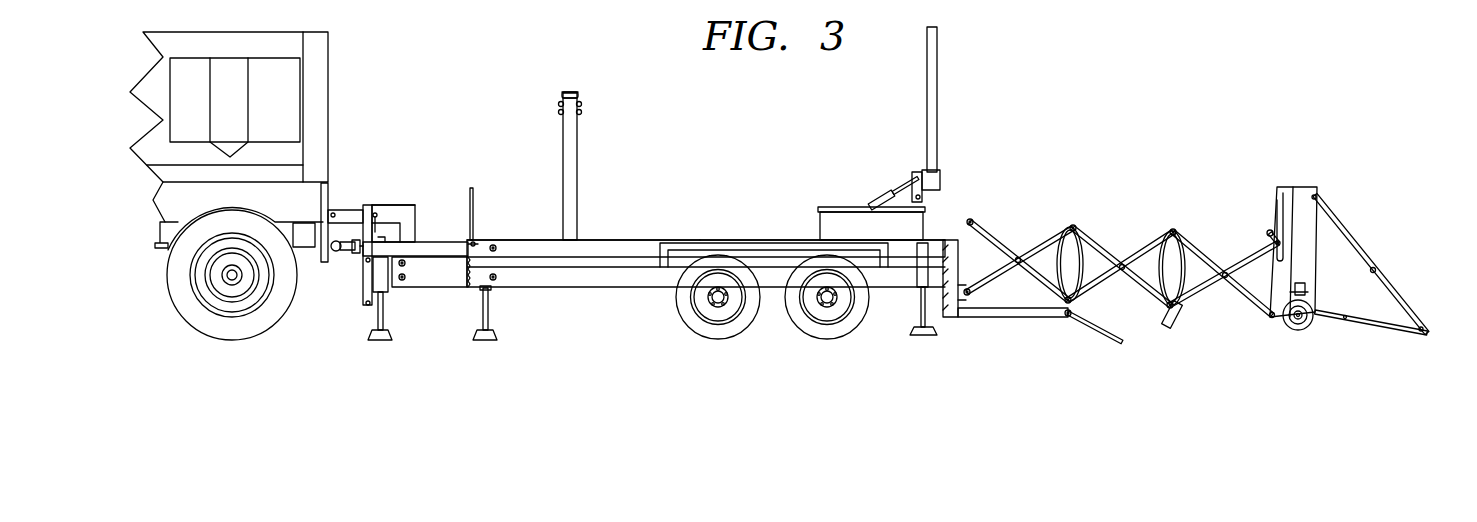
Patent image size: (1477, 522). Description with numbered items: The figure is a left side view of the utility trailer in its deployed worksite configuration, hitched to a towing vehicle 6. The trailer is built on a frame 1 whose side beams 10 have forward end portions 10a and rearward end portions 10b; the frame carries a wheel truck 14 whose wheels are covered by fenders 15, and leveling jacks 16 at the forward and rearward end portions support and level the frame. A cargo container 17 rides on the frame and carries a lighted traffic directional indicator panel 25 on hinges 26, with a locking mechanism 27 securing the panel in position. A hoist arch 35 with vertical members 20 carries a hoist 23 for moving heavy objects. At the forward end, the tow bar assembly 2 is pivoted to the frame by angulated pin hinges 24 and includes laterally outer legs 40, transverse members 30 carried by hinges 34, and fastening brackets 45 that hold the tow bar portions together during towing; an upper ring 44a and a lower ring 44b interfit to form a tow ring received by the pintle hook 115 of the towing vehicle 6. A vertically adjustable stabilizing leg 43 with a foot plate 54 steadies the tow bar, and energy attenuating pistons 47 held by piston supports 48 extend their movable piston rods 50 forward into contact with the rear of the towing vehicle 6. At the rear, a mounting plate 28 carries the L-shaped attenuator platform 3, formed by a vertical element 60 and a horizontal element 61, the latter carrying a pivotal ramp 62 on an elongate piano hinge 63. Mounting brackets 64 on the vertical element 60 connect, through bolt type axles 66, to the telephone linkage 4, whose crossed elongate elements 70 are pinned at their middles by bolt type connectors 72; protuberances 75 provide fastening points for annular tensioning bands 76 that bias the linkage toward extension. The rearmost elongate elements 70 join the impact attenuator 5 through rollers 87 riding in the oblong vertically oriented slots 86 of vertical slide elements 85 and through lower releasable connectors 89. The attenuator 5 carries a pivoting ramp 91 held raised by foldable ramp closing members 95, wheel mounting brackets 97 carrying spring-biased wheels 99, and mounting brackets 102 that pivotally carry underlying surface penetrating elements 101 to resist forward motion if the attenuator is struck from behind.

The frame 1 is at (622, 226).
The tow bar assembly 2 is at (436, 222).
The attenuator platform 3 is at (1045, 334).
The telephone linkage 4 is at (1064, 206).
The deployable impact attenuator 5 is at (1308, 170).
The towing vehicle 6 is at (342, 76).
The side beams 10 is at (658, 282).
The forward end portions 10a is at (503, 248).
The rearward end portions 10b is at (903, 262).
The wheel truck 14 is at (782, 346).
The fenders 15 is at (783, 238).
The leveling jacks 16 is at (487, 342).
The cargo container 17 is at (845, 228).
The vertical members 20 is at (570, 160).
The hoist 23 is at (562, 135).
The angulated pin hinges 24 is at (473, 242).
The lighted traffic directional indicator panel 25 is at (933, 53).
The hinges 26 is at (918, 172).
The locking mechanism 27 is at (887, 192).
The mounting plate 28 is at (947, 240).
The transverse members 30 is at (438, 270).
The hinges 34 is at (490, 287).
The hoist arch 35 is at (590, 84).
The laterally outer legs 40 is at (457, 248).
The stabilizing leg 43 is at (380, 290).
The upper ring 44a is at (341, 255).
The lower ring 44b is at (328, 227).
The fastening brackets 45 is at (368, 285).
The energy attenuating pistons 47 is at (387, 212).
The piston supports 48 is at (413, 227).
The movable piston rods 50 is at (350, 212).
The foot plate 54 is at (392, 342).
The vertical element 60 is at (969, 219).
The horizontal element 61 is at (1005, 316).
The pivotal ramp 62 is at (1078, 319).
The elongate piano hinge 63 is at (1070, 317).
The mounting brackets 64 is at (975, 294).
The bolt type axles 66 is at (964, 296).
The elongate elements 70 is at (1028, 268).
The bolt type connector 72 is at (1018, 257).
The protuberances 75 is at (1173, 230).
The annular tensioning bands 76 is at (1122, 264).
The vertical slide element 85 is at (1287, 192).
The oblong vertically oriented slot 86 is at (1277, 193).
The rollers 87 is at (1280, 246).
The releasable connectors 89 is at (1272, 318).
The pivoting ramp 91 is at (1345, 318).
The foldable ramp closing members 95 is at (1353, 232).
The wheel mounting brackets 97 is at (1306, 290).
The wheel 99 is at (1300, 332).
The underlying surface penetrating elements 101 is at (1182, 318).
The mounting brackets 102 is at (1270, 231).
The pintle hook 115 is at (325, 240).